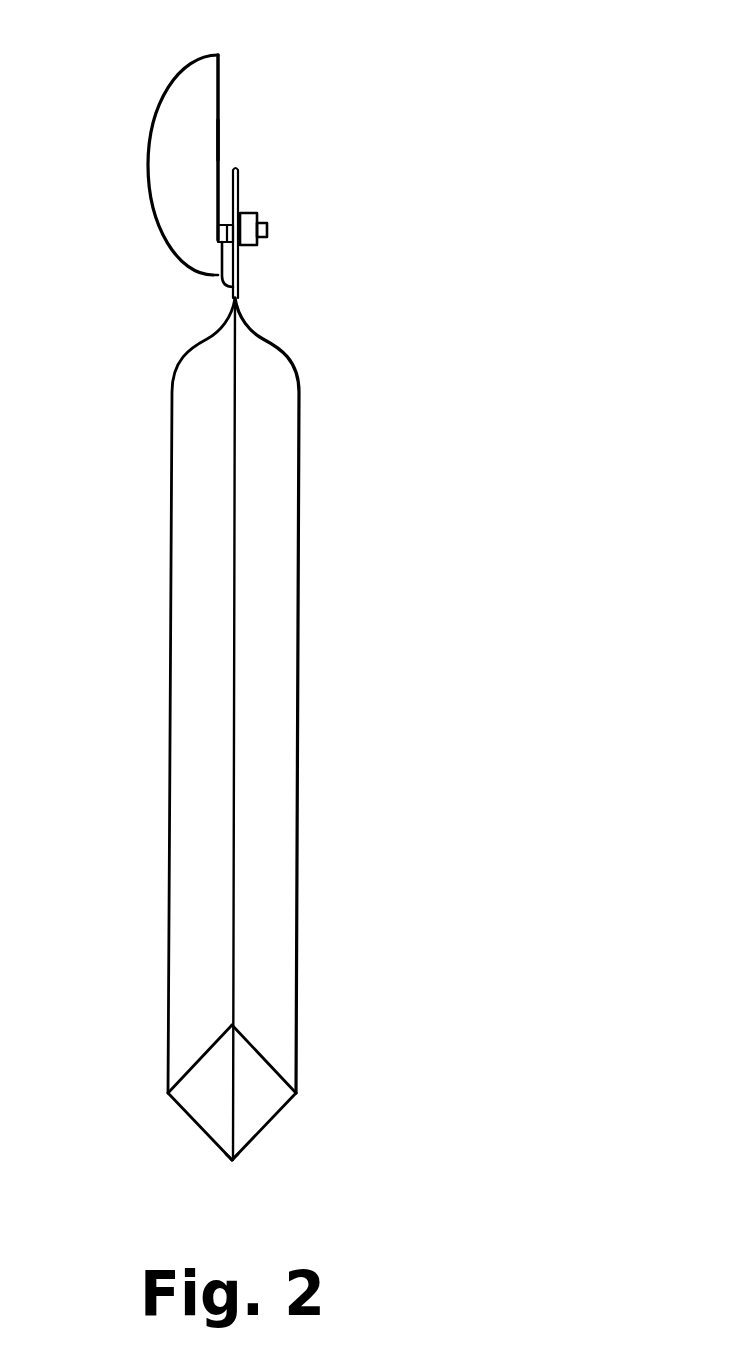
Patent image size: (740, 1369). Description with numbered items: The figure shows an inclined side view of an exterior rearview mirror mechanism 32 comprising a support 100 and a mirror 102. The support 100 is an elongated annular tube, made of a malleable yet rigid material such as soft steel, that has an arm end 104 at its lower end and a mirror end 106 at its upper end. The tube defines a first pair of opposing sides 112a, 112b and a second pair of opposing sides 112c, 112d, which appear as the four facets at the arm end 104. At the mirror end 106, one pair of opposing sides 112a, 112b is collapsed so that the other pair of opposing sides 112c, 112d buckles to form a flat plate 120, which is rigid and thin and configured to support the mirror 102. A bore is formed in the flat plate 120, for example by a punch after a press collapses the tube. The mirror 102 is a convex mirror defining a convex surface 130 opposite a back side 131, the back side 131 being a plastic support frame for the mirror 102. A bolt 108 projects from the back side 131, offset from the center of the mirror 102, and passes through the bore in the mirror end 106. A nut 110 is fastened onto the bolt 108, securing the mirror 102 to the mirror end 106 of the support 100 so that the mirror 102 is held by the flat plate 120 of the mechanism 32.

The exterior rearview mirror mechanism 32 is at (507, 518).
The support 100 is at (285, 802).
The mirror 102 is at (220, 54).
The arm end 104 is at (297, 1093).
The mirror end 106 is at (240, 178).
The bolt 108 is at (212, 288).
The nut 110 is at (245, 247).
The opposing side 112a is at (195, 1108).
The opposing side 112b is at (285, 1032).
The opposing side 112c is at (190, 1033).
The opposing side 112d is at (255, 1108).
The flat plate 120 is at (258, 273).
The convex surface 130 is at (152, 130).
The back side 131 is at (220, 137).